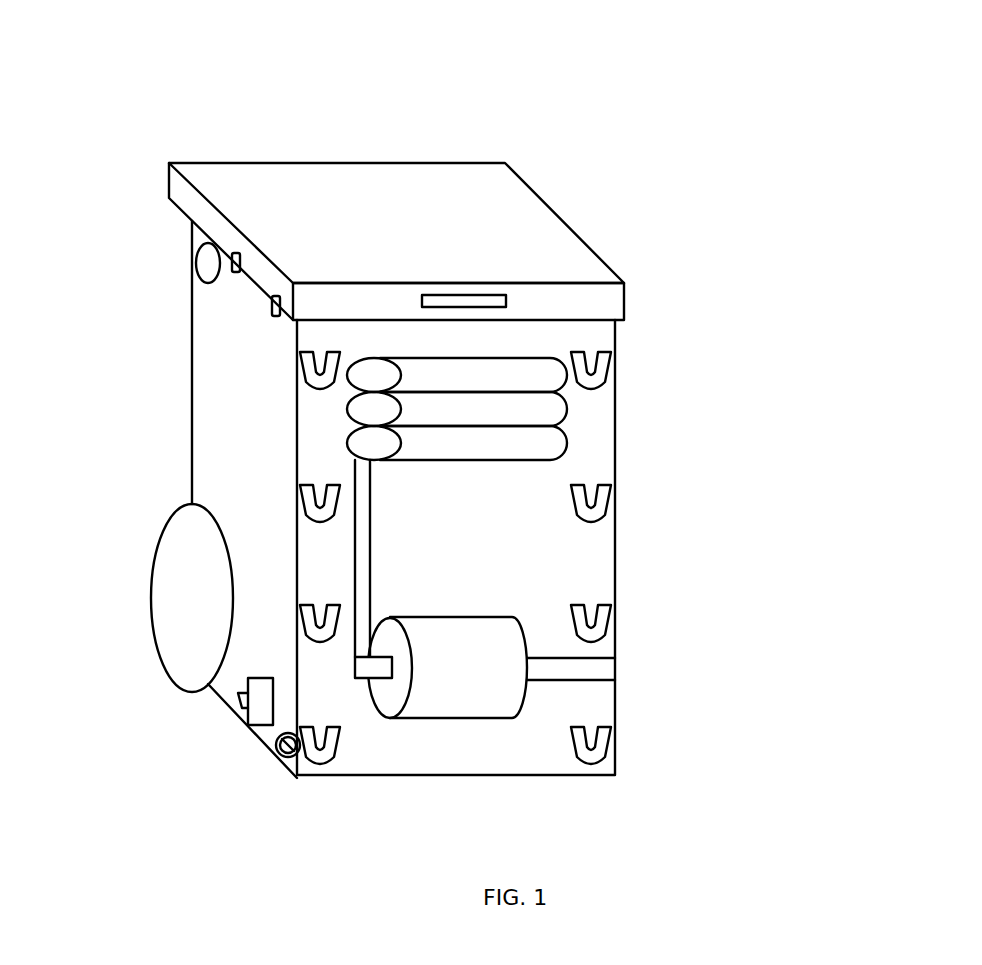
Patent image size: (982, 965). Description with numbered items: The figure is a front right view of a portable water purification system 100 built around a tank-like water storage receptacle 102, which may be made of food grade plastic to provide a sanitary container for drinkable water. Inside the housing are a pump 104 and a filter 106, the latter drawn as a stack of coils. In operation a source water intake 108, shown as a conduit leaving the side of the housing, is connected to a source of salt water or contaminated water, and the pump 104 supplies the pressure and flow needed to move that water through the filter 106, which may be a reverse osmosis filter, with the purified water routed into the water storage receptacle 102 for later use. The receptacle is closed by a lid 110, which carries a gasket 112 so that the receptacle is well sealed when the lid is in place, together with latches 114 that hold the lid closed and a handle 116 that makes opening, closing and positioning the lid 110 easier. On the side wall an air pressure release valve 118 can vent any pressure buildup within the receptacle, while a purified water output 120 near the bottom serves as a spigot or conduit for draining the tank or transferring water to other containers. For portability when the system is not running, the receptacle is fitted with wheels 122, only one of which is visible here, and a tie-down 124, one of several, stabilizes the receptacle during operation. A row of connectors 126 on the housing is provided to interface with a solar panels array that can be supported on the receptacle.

The portable water purification system 100 is at (710, 67).
The water storage receptacle 102 is at (240, 464).
The pump 104 is at (450, 707).
The filter 106 is at (520, 355).
The source water intake 108 is at (632, 678).
The lid 110 is at (258, 177).
The gasket 112 is at (601, 321).
The latches 114 is at (276, 288).
The handles 116 is at (465, 292).
The air pressure release valve 118 is at (187, 257).
The purified water output 120 is at (232, 712).
The wheels 122 is at (147, 620).
The tie-downs 124 is at (275, 757).
The connectors 126 is at (625, 383).